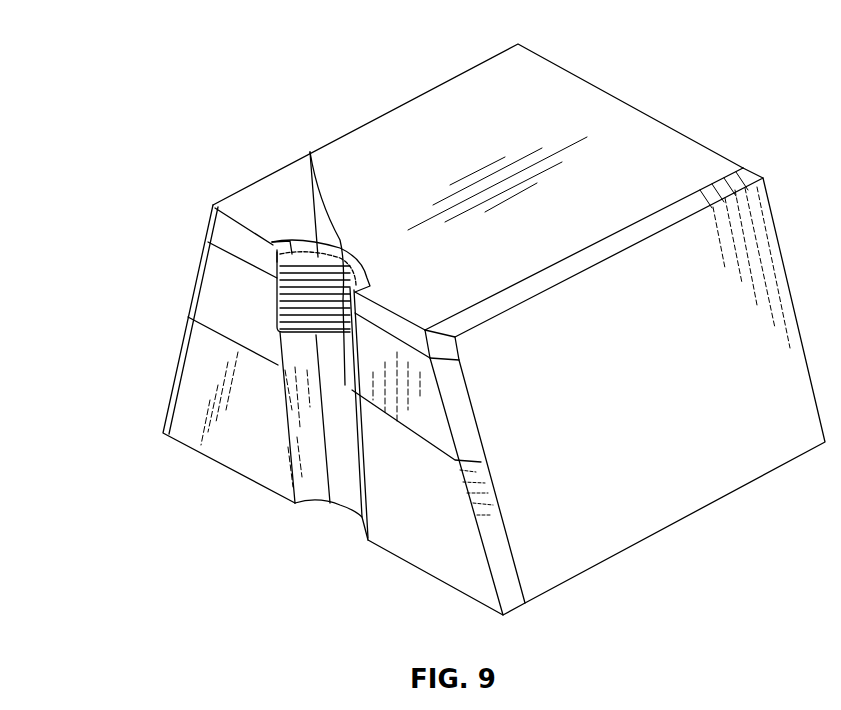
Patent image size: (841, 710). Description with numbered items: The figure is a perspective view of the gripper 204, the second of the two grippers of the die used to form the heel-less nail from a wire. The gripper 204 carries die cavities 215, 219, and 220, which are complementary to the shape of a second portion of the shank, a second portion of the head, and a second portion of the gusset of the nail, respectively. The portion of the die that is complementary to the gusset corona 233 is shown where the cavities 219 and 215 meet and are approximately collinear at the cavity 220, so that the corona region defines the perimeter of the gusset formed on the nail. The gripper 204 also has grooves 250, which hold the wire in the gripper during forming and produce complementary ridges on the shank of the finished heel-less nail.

The gripper 204 is at (405, 127).
The die cavity 215 is at (317, 345).
The die cavity 219 is at (283, 247).
The die cavity 220 is at (310, 150).
The gusset corona 233 is at (281, 240).
The grooves 250 is at (272, 302).